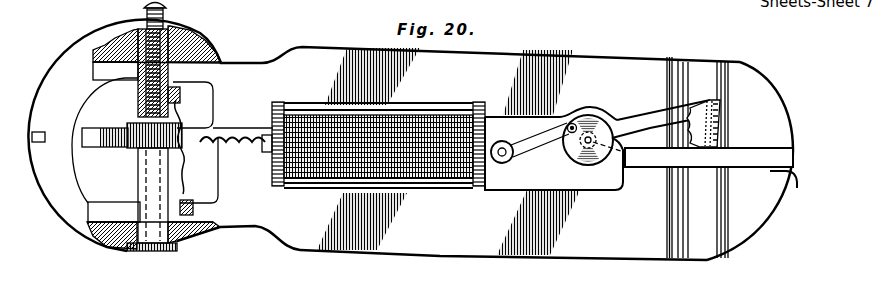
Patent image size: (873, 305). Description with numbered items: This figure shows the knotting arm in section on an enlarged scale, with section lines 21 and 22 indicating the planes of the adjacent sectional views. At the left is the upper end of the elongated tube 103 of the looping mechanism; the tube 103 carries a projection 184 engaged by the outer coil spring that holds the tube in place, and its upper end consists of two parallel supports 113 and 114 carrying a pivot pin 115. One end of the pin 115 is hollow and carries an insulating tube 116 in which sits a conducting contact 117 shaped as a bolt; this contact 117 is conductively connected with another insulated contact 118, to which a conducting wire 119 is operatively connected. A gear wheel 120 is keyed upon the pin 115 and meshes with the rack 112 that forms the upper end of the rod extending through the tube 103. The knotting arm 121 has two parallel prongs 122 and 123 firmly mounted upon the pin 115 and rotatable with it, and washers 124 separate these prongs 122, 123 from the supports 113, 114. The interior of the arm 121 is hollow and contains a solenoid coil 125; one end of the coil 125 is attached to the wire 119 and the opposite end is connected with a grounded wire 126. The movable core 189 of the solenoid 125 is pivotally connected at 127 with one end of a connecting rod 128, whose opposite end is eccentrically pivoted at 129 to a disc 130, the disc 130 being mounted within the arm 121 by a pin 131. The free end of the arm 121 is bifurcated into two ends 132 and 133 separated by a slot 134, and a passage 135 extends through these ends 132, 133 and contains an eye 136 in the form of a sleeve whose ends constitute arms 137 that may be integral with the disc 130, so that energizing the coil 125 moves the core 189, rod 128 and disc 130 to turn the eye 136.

The Figure 21 section line 21 is at (53, 137).
The Figure 22 section line 22 is at (165, 7).
The tube 103 is at (68, 201).
The rack 112 is at (95, 133).
The support 113 is at (205, 47).
The support 114 is at (200, 238).
The pin 115 is at (143, 244).
The insulating tube 116 is at (143, 28).
The conducting contact 117 is at (146, 6).
The insulated contact 118 is at (182, 91).
The conducting wire 119 is at (180, 104).
The gear wheel 120 is at (145, 146).
The knotting arm 121 is at (400, 258).
The prong 122 is at (110, 70).
The prong 123 is at (110, 207).
The washers 124 is at (225, 60).
The solenoid coil 125 is at (412, 118).
The grounded wire 126 is at (185, 194).
The pivot 127 is at (501, 164).
The connecting rod 128 is at (547, 143).
The eccentric pivot 129 is at (573, 122).
The disc 130 is at (597, 158).
The pin 131 is at (629, 158).
The end 132 is at (758, 97).
The end 133 is at (770, 218).
The slot 134 is at (790, 185).
The passage 135 is at (703, 259).
The eye 136 is at (717, 107).
The arms 137 is at (640, 123).
The projection 184 is at (37, 146).
The movable core 189 is at (485, 137).